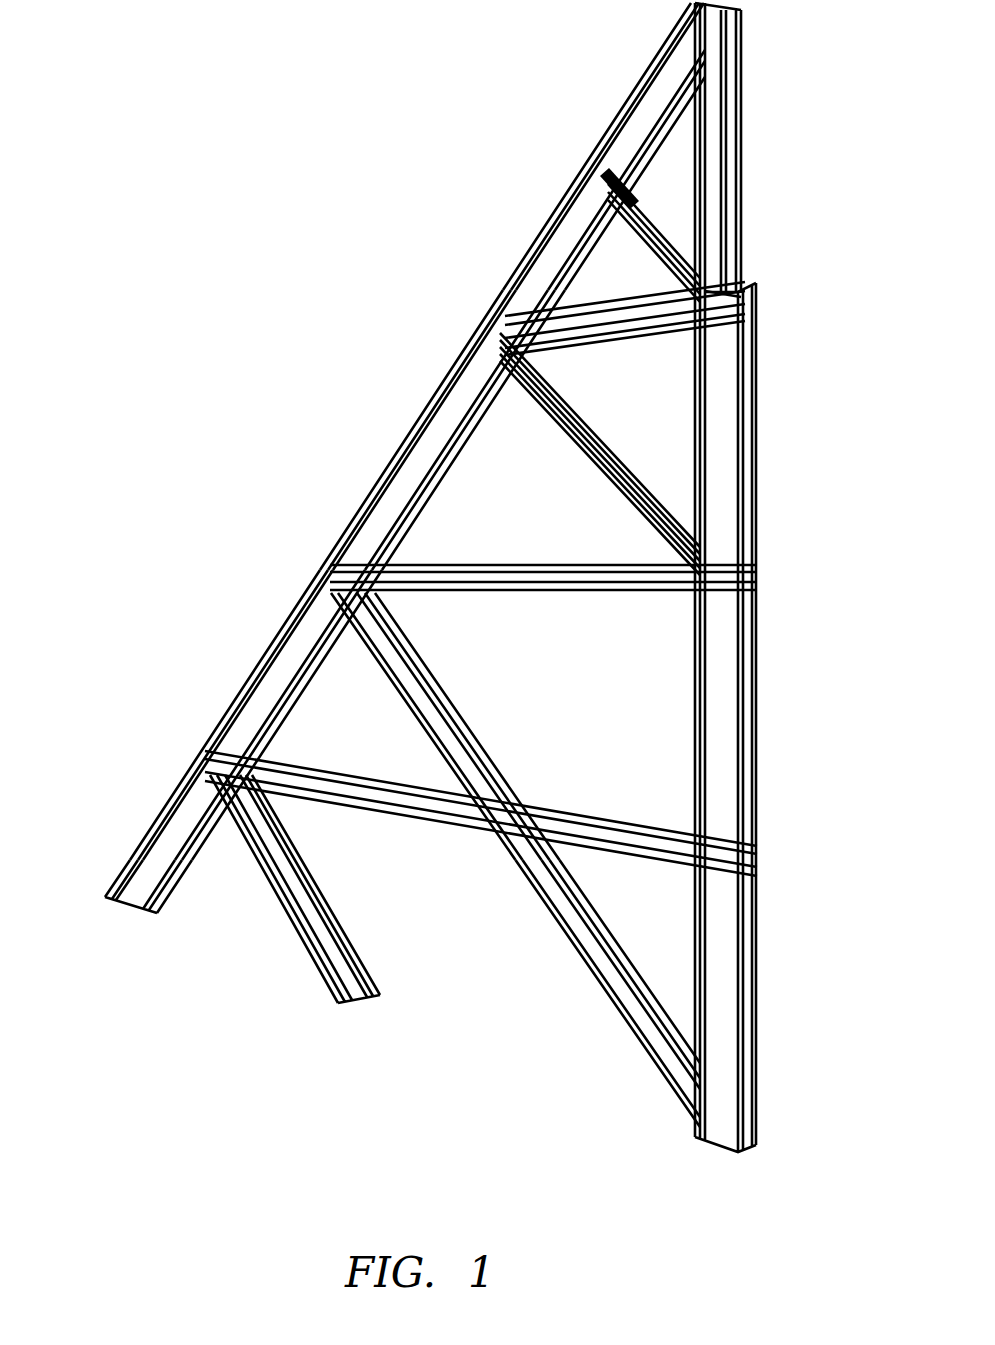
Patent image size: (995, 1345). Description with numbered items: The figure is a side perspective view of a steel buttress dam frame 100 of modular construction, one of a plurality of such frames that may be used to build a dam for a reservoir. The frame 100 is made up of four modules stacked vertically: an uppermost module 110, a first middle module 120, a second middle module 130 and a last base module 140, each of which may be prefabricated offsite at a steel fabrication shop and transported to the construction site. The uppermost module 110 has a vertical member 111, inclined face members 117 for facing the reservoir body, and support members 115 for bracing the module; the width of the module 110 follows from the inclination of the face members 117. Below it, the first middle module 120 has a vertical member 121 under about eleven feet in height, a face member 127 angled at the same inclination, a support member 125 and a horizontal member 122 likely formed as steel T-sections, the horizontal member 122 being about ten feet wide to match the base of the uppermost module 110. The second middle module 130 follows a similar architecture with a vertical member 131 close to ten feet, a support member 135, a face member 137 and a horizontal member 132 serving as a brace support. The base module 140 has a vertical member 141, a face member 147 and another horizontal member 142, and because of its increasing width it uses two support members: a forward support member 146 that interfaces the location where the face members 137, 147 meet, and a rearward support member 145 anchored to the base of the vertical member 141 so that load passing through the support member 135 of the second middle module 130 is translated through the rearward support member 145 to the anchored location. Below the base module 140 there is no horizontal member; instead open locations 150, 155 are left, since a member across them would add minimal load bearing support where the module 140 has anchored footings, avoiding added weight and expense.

The steel buttress dam frame 100 is at (148, 82).
The uppermost module 110 is at (770, 15).
The vertical member 111 is at (742, 82).
The support member 115 is at (643, 207).
The face member 117 is at (582, 173).
The first middle module 120 is at (770, 290).
The vertical member 121 is at (757, 372).
The horizontal member 122 is at (665, 320).
The support member 125 is at (600, 457).
The face member 127 is at (397, 452).
The second middle module 130 is at (770, 578).
The vertical member 131 is at (757, 645).
The horizontal member 132 is at (667, 590).
The support member 135 is at (413, 713).
The face member 137 is at (247, 687).
The base module 140 is at (770, 865).
The vertical member 141 is at (757, 925).
The horizontal member 142 is at (662, 847).
The rearward support member 145 is at (657, 1043).
The forward support member 146 is at (272, 895).
The face member 147 is at (143, 831).
The open location 150 is at (258, 958).
The open location 155 is at (478, 1021).